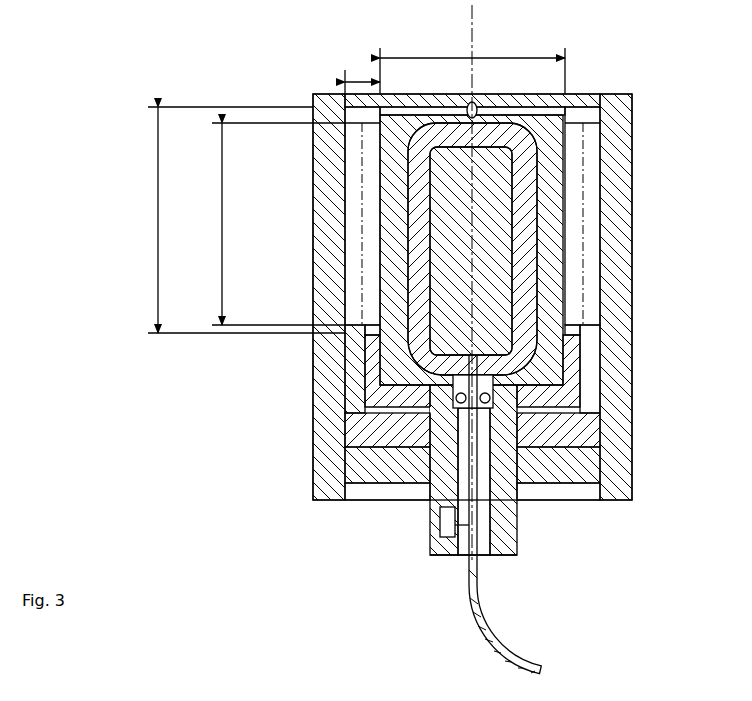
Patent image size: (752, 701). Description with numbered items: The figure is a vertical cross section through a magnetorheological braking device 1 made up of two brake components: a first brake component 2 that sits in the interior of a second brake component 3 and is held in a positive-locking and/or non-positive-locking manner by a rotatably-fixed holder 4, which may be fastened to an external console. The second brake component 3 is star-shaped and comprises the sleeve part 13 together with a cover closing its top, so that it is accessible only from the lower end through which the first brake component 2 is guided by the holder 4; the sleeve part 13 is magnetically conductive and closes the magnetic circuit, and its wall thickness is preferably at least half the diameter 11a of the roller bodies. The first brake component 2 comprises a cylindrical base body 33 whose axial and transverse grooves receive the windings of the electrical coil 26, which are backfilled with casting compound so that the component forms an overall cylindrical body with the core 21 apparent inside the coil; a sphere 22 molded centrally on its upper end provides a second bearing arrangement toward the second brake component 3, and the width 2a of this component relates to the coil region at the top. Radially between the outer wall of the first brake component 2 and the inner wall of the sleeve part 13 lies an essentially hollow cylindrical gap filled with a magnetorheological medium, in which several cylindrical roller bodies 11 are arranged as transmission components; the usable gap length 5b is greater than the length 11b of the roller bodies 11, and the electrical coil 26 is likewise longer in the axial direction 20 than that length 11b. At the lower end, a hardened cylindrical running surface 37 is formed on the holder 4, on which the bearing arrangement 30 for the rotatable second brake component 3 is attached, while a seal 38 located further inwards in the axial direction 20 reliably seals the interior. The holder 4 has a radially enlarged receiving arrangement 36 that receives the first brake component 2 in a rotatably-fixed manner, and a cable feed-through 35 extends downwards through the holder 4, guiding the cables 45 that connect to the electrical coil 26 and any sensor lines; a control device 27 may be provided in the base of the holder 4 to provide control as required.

The magnetorheological braking device 1 is at (228, 87).
The first brake component 2 is at (567, 113).
The cover width 2a is at (447, 57).
The second brake component 3 is at (634, 127).
The holder 4 is at (357, 377).
The gap length 5b is at (158, 282).
The roller bodies 11 is at (355, 222).
The diameter of the roller bodies 11a is at (363, 82).
The length of the roller bodies 11b is at (222, 253).
The sleeve part 13 is at (620, 208).
The axial direction 20 is at (473, 41).
The core 21 is at (498, 323).
The sphere 22 is at (466, 100).
The electrical coil 26 is at (520, 128).
The control device 27 is at (440, 533).
The bearing arrangement 30 is at (363, 470).
The cylindrical base body 33 is at (565, 177).
The cable feed-through 35 is at (482, 540).
The receiving arrangement 36 is at (576, 370).
The cylindrical running surface 37 is at (426, 466).
The seal 38 is at (363, 428).
The cables 45 is at (492, 627).